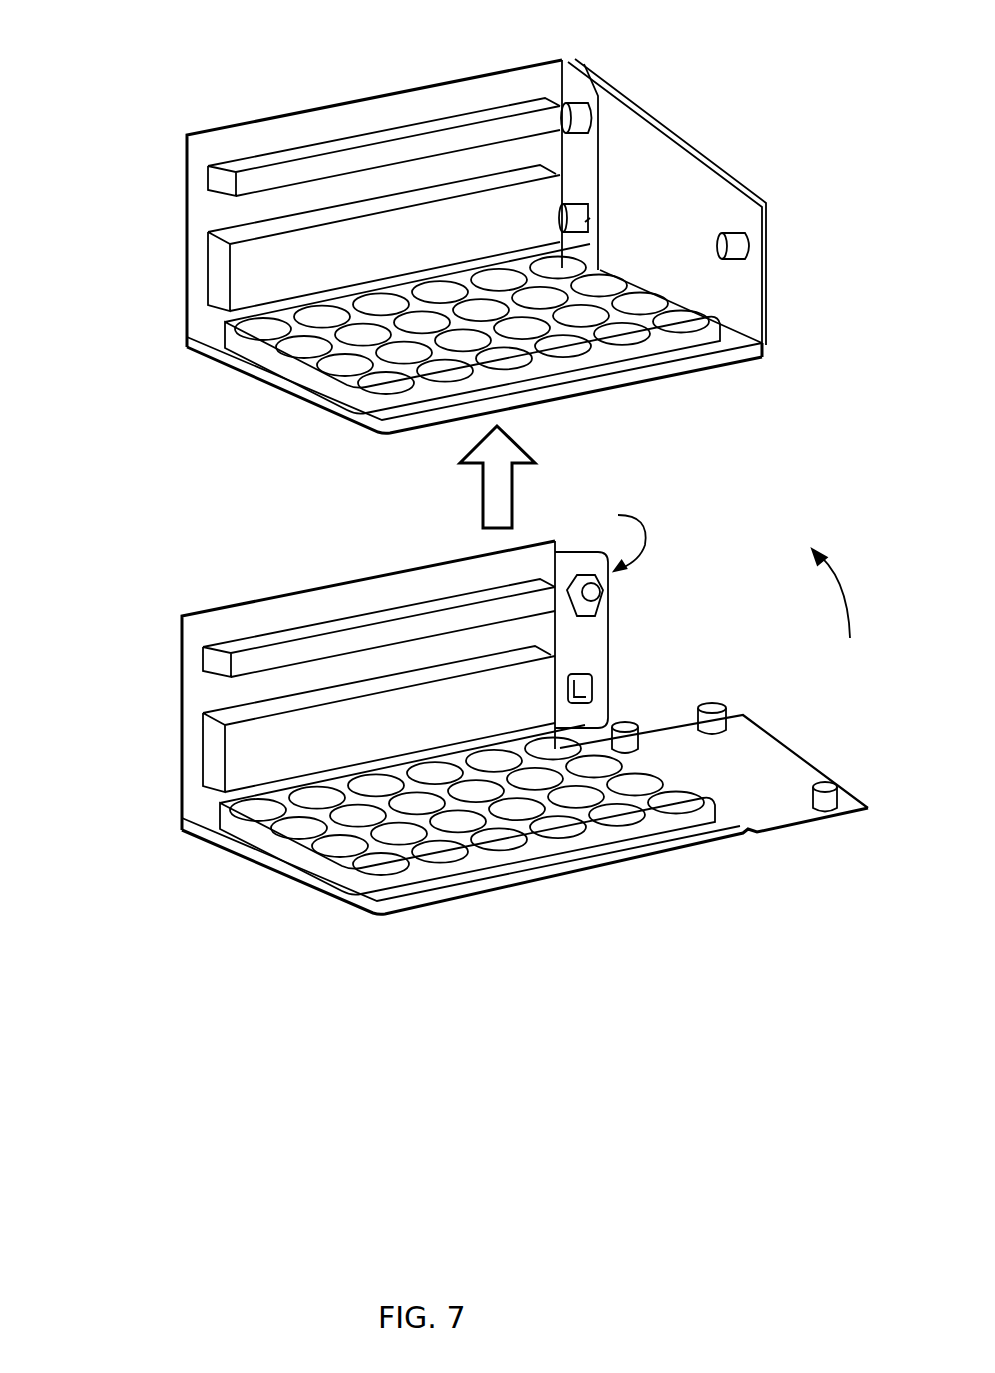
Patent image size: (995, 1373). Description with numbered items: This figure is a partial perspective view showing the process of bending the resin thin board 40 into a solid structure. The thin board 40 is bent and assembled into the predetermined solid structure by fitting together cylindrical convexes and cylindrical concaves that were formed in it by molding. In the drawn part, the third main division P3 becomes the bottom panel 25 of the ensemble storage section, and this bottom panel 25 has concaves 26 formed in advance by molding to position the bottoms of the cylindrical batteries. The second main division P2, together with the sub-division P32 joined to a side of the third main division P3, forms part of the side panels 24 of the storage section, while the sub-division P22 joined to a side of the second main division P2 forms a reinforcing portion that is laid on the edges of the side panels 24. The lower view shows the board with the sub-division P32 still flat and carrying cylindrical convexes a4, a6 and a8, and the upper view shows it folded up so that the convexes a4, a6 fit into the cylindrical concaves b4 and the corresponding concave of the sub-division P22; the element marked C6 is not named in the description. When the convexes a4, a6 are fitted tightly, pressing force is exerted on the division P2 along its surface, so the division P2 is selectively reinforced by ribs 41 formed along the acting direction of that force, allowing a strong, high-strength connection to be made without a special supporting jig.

The resin thin board 40 is at (456, 495).
The second main division P2 is at (197, 220).
The side panels 24 is at (302, 451).
The ribs 41 is at (238, 285).
The sub-division P22 is at (592, 152).
The cylindrical concave b4 is at (562, 108).
The cylindrical convex a4 is at (580, 112).
The cylindrical convex a6 is at (577, 213).
The hole C6 is at (590, 220).
The third main division P3 is at (368, 433).
The sub-division P32 is at (748, 315).
The cylindrical convex a8 is at (737, 248).
The bottom panel 25 is at (213, 368).
The concaves 26 is at (340, 362).